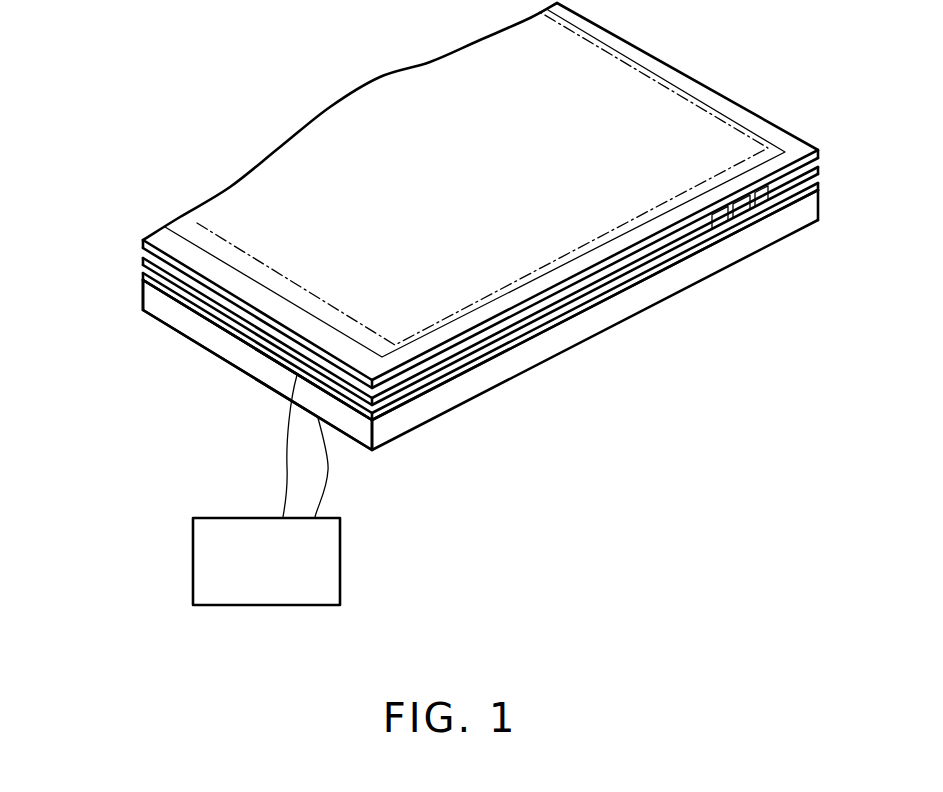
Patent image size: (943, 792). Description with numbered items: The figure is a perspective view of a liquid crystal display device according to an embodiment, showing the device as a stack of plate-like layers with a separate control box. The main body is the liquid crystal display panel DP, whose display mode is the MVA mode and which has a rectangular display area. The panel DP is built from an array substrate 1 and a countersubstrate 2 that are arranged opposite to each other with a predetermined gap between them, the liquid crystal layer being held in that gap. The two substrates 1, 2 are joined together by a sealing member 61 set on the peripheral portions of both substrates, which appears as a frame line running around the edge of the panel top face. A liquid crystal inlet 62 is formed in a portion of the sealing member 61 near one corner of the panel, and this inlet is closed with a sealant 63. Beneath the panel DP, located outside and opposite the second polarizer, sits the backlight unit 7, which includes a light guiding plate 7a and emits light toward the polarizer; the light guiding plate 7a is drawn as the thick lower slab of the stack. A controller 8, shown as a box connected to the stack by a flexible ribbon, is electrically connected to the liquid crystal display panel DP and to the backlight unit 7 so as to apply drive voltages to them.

The liquid crystal display panel DP is at (133, 262).
The array substrate 1 is at (383, 400).
The countersubstrate 2 is at (478, 315).
The sealing member 61 is at (562, 268).
The liquid crystal inlet 62 is at (752, 205).
The sealant 63 is at (740, 207).
The backlight unit 7 is at (220, 365).
The light guiding plate 7a is at (260, 372).
The controller 8 is at (341, 562).